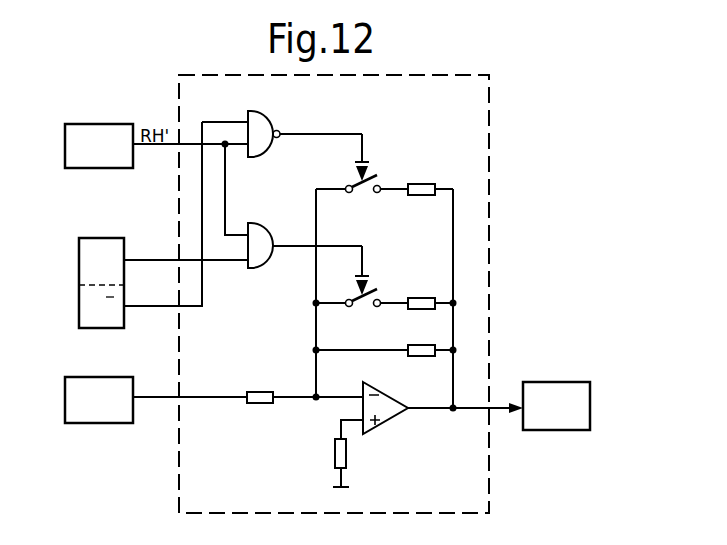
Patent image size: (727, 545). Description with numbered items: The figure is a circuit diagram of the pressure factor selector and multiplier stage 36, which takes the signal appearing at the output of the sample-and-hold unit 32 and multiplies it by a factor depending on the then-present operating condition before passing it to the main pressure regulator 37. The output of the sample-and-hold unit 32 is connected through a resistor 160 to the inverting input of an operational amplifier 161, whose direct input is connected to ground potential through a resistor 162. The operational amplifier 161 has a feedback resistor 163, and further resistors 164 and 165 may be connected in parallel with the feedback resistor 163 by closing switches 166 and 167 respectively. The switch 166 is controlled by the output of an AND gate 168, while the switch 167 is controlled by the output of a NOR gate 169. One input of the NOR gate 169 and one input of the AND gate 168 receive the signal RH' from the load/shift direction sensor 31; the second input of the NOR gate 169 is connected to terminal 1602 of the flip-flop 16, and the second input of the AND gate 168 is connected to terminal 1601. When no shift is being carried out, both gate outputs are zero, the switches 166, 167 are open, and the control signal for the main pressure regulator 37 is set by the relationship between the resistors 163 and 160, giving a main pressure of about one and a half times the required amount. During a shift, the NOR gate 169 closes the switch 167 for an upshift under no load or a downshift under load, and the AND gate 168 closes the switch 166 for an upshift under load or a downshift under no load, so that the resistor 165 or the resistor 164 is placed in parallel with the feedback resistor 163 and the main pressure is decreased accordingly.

The flip-flop 16 is at (88, 251).
The terminal of flip-flop 1601 is at (127, 259).
The terminal of flip-flop 1602 is at (126, 307).
The load/shift direction sensor 31 is at (95, 130).
The sample-and-hold unit 32 is at (68, 386).
The pressure factor selector and multiplier stage 36 is at (490, 195).
The main pressure regulator 37 is at (546, 394).
The resistor 160 is at (260, 395).
The operational amplifier 161 is at (385, 408).
The resistor 162 is at (334, 457).
The feedback resistor 163 is at (418, 351).
The resistor 164 is at (417, 302).
The resistor 165 is at (421, 190).
The switch 166 is at (356, 308).
The switch 167 is at (360, 194).
The AND gate 168 is at (256, 236).
The NOR gate 169 is at (262, 128).